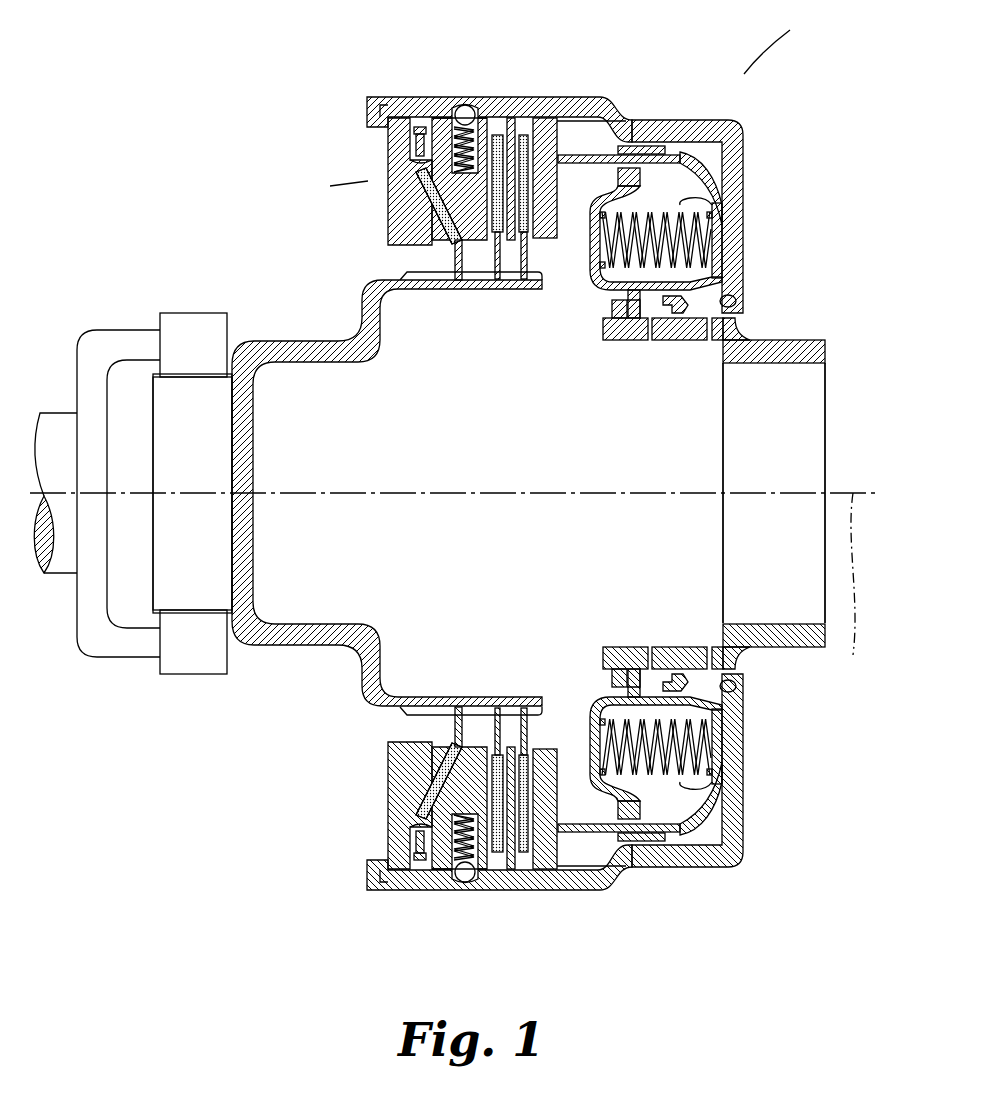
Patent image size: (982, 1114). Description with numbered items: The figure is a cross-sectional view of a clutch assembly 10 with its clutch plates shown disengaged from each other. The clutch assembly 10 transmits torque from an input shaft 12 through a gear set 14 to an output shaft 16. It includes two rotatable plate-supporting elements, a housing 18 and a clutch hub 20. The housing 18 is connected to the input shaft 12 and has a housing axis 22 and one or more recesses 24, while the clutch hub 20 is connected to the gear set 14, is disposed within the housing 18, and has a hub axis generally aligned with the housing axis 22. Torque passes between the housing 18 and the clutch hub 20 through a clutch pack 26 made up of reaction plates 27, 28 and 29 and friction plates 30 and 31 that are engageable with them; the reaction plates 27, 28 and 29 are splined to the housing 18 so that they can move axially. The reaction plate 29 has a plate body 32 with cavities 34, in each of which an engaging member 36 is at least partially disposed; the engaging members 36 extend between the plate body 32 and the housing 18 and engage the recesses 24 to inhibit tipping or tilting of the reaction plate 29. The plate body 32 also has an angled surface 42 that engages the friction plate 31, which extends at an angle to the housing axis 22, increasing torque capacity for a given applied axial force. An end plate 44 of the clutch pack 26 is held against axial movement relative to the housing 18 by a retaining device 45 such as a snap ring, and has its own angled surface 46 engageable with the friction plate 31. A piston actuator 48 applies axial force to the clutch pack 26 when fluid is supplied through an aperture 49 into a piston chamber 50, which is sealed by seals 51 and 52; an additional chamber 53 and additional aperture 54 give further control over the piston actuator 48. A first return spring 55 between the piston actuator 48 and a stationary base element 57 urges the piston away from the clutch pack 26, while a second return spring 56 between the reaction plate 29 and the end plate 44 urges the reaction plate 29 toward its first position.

The clutch assembly 10 is at (782, 44).
The input shaft 12 is at (810, 338).
The gear set 14 is at (232, 323).
The output shaft 16 is at (60, 577).
The housing 18 is at (744, 152).
The clutch hub 20 is at (302, 648).
The housing axis 22 is at (850, 526).
The recesses 24 is at (490, 882).
The clutch pack 26 is at (327, 189).
The reaction plate 27 is at (558, 133).
The reaction plate 28 is at (512, 138).
The reaction plate 29 is at (440, 133).
The friction plate 30 is at (496, 134).
The friction plate 31 is at (432, 190).
The plate body 32 is at (495, 284).
The cavities 34 is at (456, 132).
The engaging members 36 is at (462, 95).
The angled surface 42 is at (414, 133).
The end plate 44 is at (388, 215).
The retaining device 45 is at (388, 115).
The angled surface 46 is at (456, 284).
The piston actuator 48 is at (704, 178).
The aperture 49 is at (705, 338).
The piston chamber 50 is at (722, 298).
The seal 51 is at (636, 145).
The seal 52 is at (677, 338).
The additional chamber 53 is at (636, 332).
The additional aperture 54 is at (652, 330).
The first return spring 55 is at (678, 202).
The second return spring 56 is at (421, 128).
The stationary base element 57 is at (594, 280).